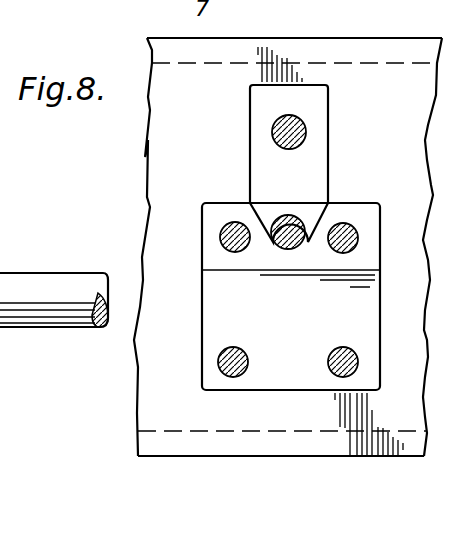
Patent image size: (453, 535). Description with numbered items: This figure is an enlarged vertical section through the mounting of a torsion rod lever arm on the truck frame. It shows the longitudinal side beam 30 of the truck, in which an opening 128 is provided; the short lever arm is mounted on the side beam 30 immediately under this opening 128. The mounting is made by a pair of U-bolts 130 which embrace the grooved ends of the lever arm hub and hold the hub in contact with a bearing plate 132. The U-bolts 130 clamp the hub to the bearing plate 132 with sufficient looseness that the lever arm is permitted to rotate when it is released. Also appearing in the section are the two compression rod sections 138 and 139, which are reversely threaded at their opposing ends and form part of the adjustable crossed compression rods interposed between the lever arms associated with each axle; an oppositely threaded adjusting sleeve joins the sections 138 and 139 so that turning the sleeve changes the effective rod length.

The longitudinal side beam 30 is at (155, 153).
The opening 128 is at (318, 96).
The U-bolts 130 is at (222, 236).
The bearing plate 132 is at (214, 313).
The compression rod section 138 is at (311, 201).
The compression rod section 139 is at (282, 150).